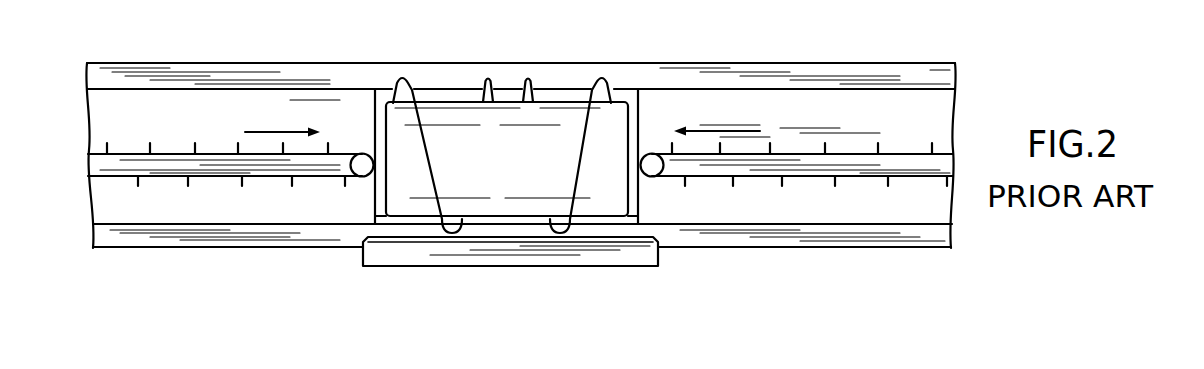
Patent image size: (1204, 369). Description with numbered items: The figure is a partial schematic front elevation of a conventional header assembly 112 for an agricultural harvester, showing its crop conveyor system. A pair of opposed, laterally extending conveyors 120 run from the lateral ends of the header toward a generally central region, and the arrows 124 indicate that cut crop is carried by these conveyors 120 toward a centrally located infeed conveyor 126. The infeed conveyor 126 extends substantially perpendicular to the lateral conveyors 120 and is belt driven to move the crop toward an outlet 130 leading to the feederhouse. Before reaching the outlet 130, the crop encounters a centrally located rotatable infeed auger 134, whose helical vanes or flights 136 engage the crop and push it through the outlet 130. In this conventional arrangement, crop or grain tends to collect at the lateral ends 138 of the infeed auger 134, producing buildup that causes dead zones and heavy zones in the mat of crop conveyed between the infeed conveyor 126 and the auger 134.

The header assembly 112 is at (940, 40).
The laterally extending conveyors 120 is at (172, 150).
The arrows 124 is at (268, 132).
The infeed conveyor 126 is at (658, 255).
The outlet 130 is at (633, 95).
The infeed auger 134 is at (525, 178).
The helical vanes or flights 136 is at (403, 72).
The lateral ends of the infeed auger 138 is at (384, 195).